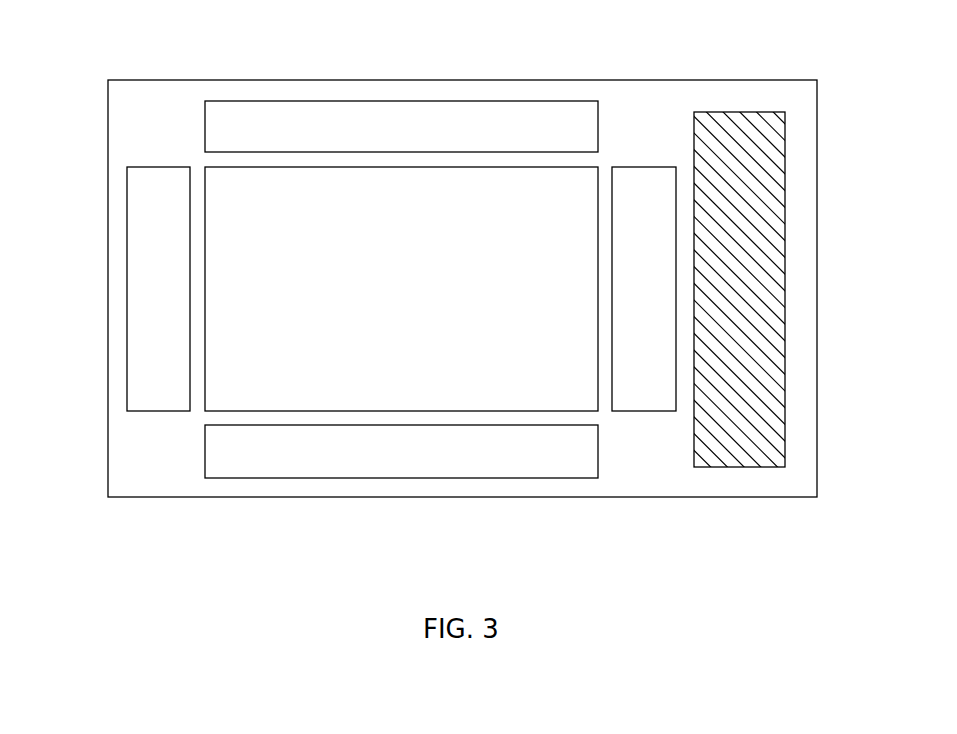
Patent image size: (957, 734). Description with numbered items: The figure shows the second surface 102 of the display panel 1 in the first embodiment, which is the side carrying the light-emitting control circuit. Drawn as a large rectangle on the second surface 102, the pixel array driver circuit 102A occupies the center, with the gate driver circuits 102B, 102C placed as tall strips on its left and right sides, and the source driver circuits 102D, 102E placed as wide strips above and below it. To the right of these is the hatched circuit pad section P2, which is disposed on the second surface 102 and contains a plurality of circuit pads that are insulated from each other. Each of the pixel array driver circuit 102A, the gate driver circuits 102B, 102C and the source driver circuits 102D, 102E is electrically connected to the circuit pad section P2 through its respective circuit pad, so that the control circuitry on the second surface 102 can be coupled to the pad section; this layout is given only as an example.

The electronic device 1 is at (105, 25).
The second surface 102 is at (143, 123).
The pixel array driver circuit 102A is at (433, 302).
The gate driver circuit 102B is at (162, 398).
The gate driver circuit 102C is at (648, 398).
The source driver circuit 102D is at (433, 141).
The source driver circuit 102E is at (432, 464).
The circuit pad section P2 is at (743, 470).